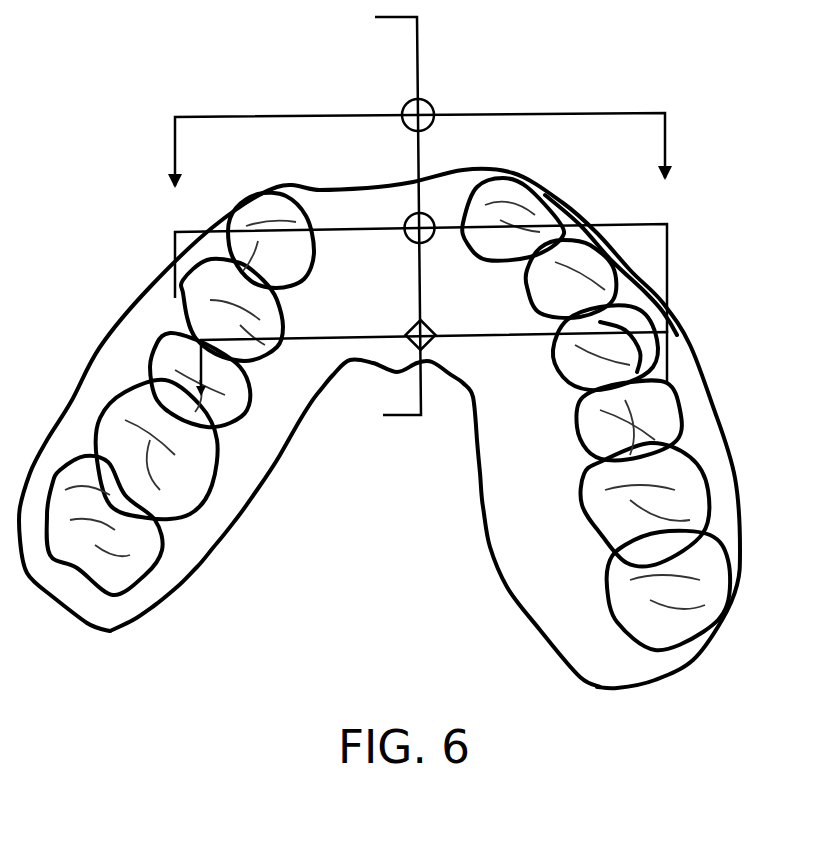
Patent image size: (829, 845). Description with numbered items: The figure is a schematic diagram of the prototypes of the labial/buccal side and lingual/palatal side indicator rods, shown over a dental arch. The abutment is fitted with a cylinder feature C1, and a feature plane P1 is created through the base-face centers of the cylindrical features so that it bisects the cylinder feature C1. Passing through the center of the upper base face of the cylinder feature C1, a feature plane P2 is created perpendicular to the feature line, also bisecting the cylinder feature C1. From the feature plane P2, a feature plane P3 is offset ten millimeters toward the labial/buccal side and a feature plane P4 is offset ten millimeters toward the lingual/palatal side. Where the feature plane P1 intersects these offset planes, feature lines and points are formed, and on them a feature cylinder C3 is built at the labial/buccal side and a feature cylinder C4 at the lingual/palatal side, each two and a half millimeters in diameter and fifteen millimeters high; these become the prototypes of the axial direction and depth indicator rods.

The cylinder feature C1 is at (402, 229).
The feature cylinder C3 is at (400, 106).
The feature cylinder C4 is at (402, 336).
The feature plane P1 is at (398, 244).
The feature plane P2 is at (452, 278).
The feature plane P3 is at (440, 150).
The feature plane P4 is at (461, 364).